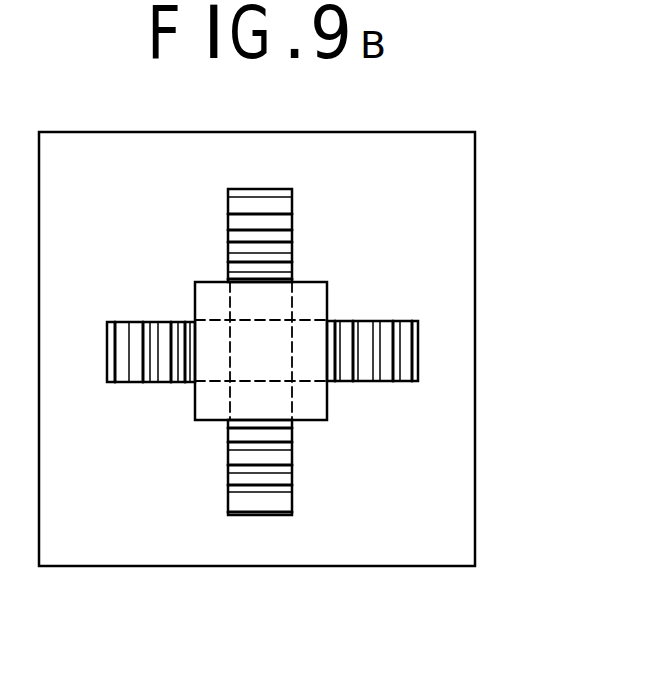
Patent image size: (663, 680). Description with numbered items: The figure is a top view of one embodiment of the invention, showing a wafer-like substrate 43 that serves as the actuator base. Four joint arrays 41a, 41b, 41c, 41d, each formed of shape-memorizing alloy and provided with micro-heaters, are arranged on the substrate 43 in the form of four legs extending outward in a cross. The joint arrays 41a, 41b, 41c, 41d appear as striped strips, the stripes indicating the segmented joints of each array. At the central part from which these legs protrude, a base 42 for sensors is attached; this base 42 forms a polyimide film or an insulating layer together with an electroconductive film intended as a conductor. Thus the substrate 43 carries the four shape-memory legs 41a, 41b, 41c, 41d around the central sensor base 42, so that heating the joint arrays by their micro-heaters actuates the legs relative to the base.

The joint array 41a is at (128, 322).
The joint array 41b is at (293, 486).
The joint array 41c is at (396, 321).
The joint array 41d is at (292, 213).
The base 42 is at (310, 292).
The substrate 43 is at (473, 487).